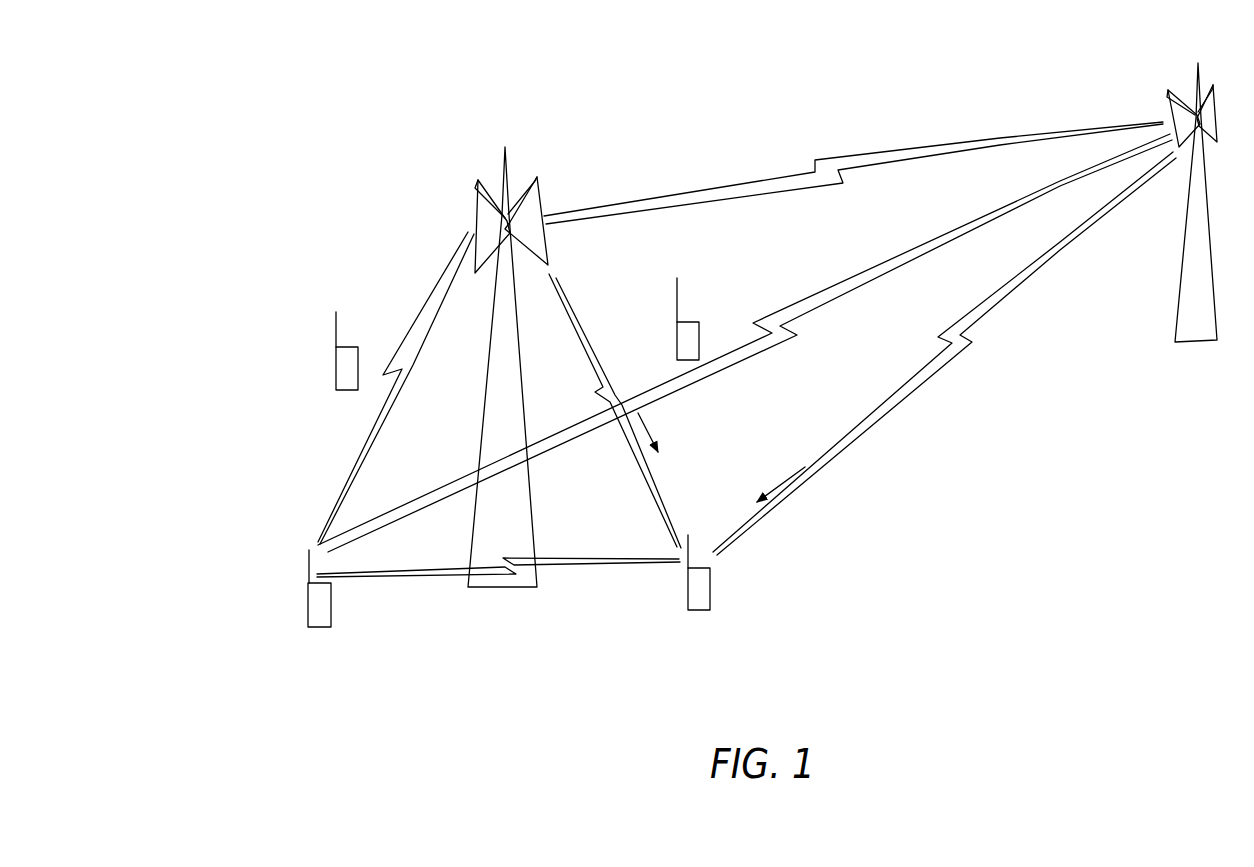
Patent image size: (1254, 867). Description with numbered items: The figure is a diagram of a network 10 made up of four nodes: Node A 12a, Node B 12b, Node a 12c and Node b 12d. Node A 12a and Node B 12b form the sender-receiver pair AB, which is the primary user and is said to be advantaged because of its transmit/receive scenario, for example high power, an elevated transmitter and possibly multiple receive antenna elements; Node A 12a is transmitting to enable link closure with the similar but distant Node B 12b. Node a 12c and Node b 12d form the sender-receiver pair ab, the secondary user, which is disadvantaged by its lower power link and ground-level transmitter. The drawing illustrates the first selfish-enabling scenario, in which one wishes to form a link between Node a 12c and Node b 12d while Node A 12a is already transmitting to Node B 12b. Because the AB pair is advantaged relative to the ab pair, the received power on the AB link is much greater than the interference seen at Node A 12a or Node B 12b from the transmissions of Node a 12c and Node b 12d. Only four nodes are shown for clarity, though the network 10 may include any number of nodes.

The wireless communication system 10 is at (405, 102).
The Node A 12a is at (537, 177).
The Node B 12b is at (1195, 85).
The Node a 12c is at (317, 628).
The Node b 12d is at (700, 612).